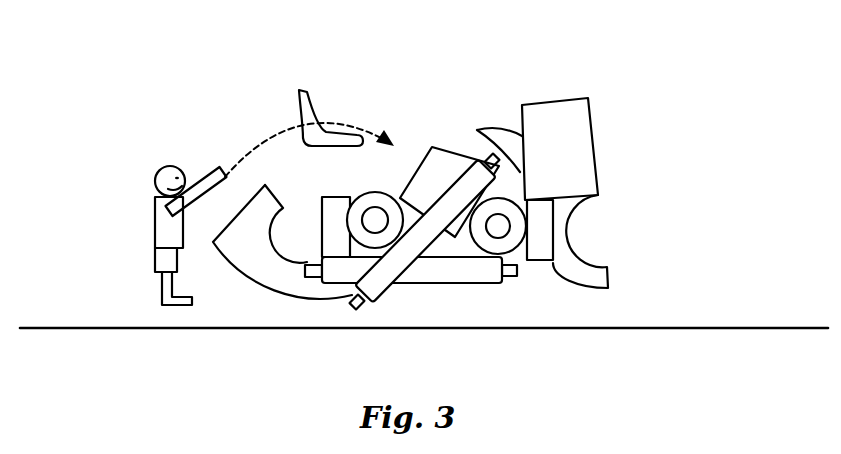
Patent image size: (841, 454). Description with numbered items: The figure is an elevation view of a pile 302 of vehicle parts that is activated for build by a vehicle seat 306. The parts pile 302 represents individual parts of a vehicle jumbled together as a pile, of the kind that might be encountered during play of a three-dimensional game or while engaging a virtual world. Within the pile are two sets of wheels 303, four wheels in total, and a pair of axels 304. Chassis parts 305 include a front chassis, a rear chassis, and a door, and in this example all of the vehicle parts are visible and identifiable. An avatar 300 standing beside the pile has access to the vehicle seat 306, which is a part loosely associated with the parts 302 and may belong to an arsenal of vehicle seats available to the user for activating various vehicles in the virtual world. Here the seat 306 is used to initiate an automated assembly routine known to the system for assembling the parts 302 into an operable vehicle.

The avatar 300 is at (153, 228).
The pile of vehicle parts 302 is at (636, 208).
The wheels 303 is at (378, 194).
The axels 304 is at (443, 283).
The chassis parts 305 is at (443, 147).
The vehicle seat 306 is at (300, 108).